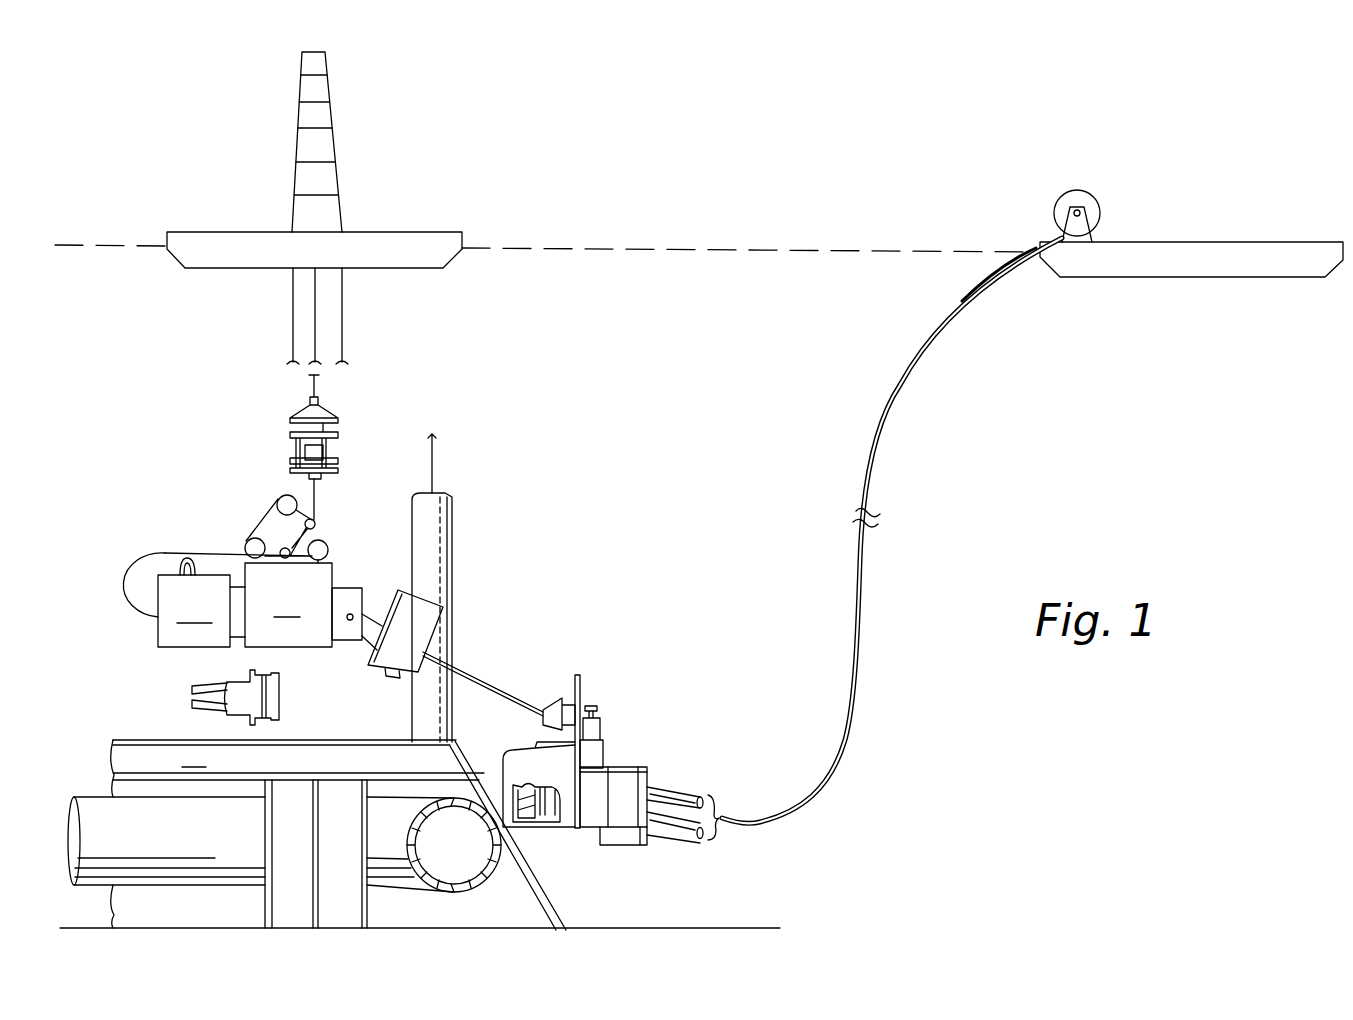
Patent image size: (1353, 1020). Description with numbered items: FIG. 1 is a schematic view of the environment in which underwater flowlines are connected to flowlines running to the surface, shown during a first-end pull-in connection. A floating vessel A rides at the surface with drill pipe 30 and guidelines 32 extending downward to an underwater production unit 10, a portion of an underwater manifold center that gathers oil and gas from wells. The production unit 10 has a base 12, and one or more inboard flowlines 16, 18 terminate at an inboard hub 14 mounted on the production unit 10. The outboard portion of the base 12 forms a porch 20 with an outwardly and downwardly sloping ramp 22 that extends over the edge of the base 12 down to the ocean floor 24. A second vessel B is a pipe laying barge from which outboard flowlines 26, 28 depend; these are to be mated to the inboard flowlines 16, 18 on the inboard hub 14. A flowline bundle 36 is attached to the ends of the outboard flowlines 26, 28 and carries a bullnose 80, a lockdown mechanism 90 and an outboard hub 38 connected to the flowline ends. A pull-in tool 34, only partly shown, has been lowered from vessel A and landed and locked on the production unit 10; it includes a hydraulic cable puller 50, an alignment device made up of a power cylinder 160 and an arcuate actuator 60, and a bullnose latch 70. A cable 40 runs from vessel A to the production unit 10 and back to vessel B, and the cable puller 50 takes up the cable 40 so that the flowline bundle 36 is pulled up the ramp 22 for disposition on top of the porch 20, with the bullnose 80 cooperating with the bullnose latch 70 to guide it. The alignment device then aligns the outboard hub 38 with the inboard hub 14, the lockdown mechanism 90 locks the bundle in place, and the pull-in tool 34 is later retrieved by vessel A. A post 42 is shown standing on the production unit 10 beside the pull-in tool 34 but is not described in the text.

The floating vessel A is at (362, 224).
The vessel B is at (1206, 238).
The production unit 10 is at (297, 834).
The base 12 is at (477, 883).
The inboard hub 14 is at (265, 700).
The flowline 16 is at (190, 688).
The flowline 18 is at (190, 704).
The porch 20 is at (370, 738).
The ramp 22 is at (560, 922).
The ocean floor 24 is at (712, 923).
The flowline 26 is at (699, 797).
The flowline 28 is at (700, 843).
The drill pipe 30 is at (314, 326).
The guidelines 32 is at (343, 316).
The pull-in tool 34 is at (246, 513).
The flowline bundle 36 is at (643, 748).
The outboard hub 38 is at (538, 822).
The cable 40 is at (320, 490).
The post 42 is at (454, 528).
The hydraulic cable puller 50 is at (279, 425).
The arcuate actuator 60 is at (303, 605).
The bullnose latch 70 is at (425, 606).
The bullnose 80 is at (570, 702).
The lockdown mechanism 90 is at (600, 708).
The power cylinder 160 is at (184, 600).